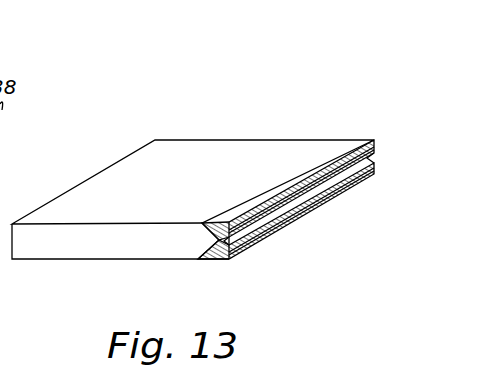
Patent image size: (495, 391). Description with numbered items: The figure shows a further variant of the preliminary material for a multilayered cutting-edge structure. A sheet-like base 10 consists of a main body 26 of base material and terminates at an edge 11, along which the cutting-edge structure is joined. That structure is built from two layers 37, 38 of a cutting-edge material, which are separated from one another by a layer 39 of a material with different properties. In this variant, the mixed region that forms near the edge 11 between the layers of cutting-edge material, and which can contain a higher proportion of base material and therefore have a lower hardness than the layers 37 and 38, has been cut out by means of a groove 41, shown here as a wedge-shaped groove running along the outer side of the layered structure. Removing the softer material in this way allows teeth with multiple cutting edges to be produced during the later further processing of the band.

The sheet-like base 10 is at (180, 157).
The edge 11 is at (202, 242).
The main body 26 is at (102, 247).
The layer of cutting-edge material 37 is at (300, 164).
The layer of cutting-edge material 38 is at (368, 140).
The layer 39 is at (337, 151).
The groove 41 is at (388, 160).